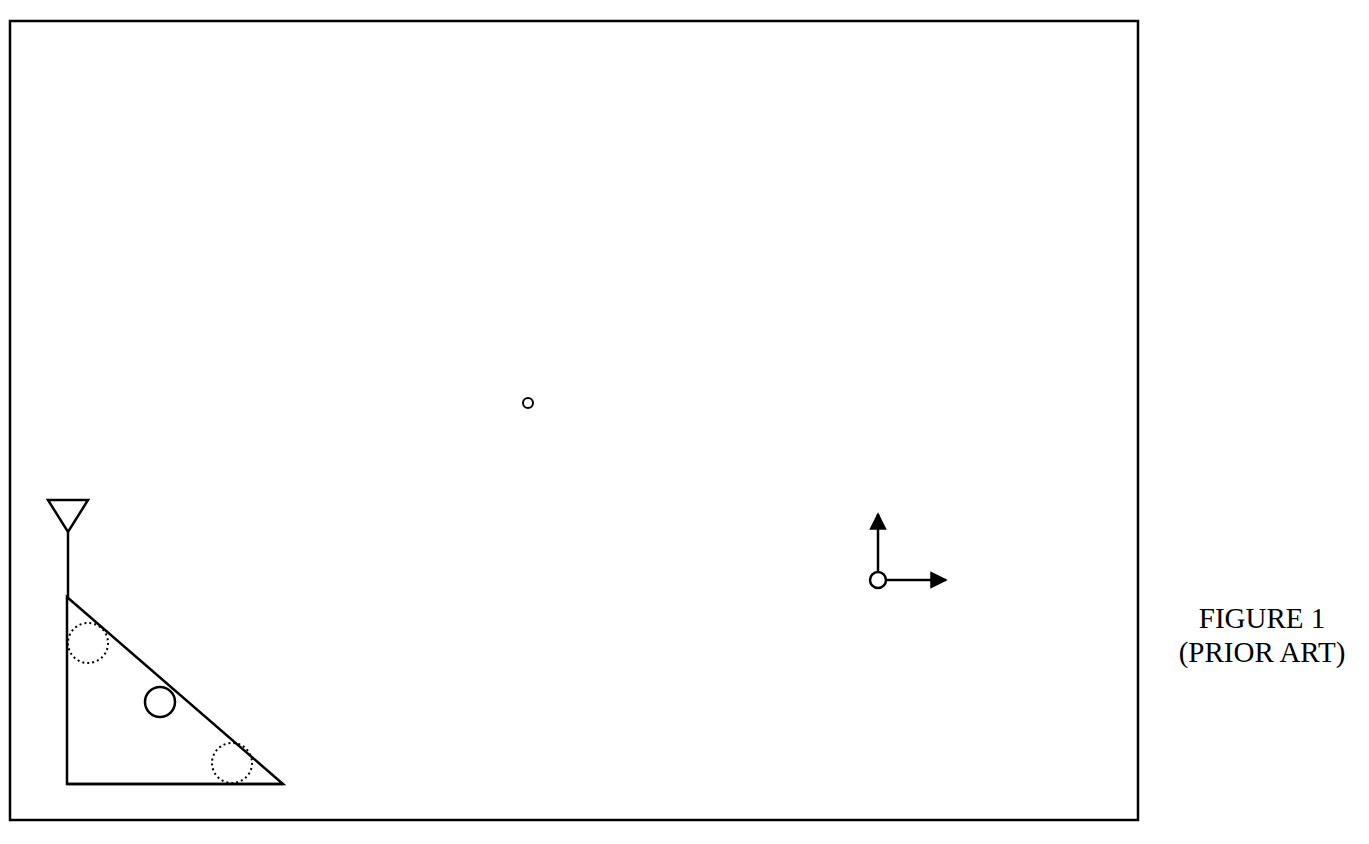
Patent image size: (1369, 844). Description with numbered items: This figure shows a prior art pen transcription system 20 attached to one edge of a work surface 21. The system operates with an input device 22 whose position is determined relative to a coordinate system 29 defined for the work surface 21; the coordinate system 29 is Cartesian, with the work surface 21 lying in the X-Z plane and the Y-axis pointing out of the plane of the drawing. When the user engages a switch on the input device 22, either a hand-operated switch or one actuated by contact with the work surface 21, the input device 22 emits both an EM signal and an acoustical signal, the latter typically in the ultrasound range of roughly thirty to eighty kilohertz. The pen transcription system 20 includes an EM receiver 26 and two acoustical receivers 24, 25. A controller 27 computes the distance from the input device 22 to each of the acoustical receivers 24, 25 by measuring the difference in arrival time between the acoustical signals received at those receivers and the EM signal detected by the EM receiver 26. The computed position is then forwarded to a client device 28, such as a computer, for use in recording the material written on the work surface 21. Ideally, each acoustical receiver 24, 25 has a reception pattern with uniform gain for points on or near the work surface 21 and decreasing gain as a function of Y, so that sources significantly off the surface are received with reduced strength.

The pen transcription system 20 is at (148, 777).
The work surface 21 is at (553, 626).
The input device 22 is at (530, 397).
The acoustical receiver 24 is at (83, 632).
The acoustical receiver 25 is at (240, 757).
The EM receiver 26 is at (157, 698).
The controller 27 is at (131, 755).
The client device 28 is at (68, 497).
The coordinate system 29 is at (873, 588).